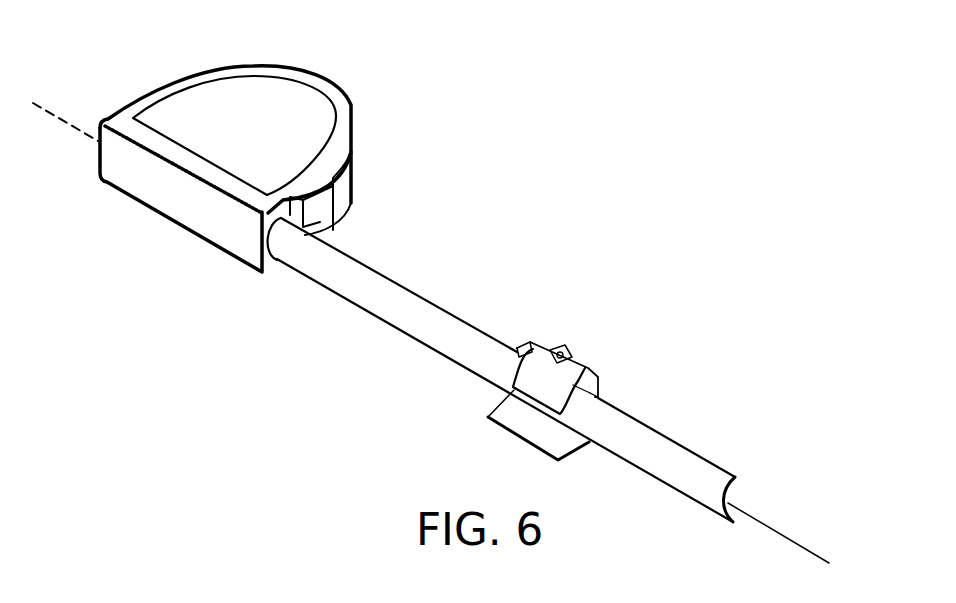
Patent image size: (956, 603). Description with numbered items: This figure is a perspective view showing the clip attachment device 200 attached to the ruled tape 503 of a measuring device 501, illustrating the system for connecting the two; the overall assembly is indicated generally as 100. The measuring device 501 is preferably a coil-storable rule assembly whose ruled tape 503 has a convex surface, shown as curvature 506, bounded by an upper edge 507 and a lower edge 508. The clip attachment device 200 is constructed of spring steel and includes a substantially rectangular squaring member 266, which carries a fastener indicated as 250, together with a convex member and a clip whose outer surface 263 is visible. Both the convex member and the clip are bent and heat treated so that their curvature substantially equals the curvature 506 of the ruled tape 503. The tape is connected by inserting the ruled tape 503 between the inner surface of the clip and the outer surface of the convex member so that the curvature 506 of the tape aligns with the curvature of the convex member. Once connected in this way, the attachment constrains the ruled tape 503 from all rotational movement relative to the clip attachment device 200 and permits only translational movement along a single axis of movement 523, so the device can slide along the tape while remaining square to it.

The medical sensor system 100 is at (182, 450).
The clip attachment device 200 is at (590, 365).
The screw 250 is at (560, 351).
The outer surface 263 is at (525, 374).
The squaring member 266 is at (540, 443).
The measuring device 501 is at (168, 220).
The ruled tape 503 is at (402, 332).
The curvature 506 is at (736, 481).
The upper edge 507 is at (356, 256).
The lower edge 508 is at (330, 293).
The axis of movement 523 is at (60, 117).